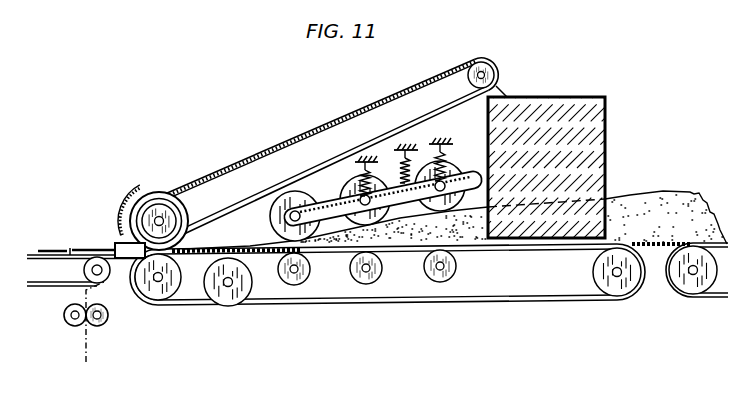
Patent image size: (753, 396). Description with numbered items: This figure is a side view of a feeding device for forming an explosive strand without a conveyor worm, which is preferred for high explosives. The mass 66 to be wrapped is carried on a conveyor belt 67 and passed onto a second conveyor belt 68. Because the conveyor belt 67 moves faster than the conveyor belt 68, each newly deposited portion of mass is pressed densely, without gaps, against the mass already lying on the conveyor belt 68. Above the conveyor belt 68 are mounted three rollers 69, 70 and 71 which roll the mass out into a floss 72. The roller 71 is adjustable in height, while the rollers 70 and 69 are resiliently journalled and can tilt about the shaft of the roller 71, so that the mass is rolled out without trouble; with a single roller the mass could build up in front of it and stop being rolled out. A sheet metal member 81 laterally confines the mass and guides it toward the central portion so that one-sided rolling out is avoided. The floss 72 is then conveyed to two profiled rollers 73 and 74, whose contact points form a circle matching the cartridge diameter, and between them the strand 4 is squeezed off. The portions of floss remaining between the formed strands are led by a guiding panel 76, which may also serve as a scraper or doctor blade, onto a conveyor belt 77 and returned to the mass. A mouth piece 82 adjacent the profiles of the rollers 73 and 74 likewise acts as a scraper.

The strand 4 is at (100, 250).
The mass 66 is at (648, 202).
The conveyor belt 67 is at (680, 297).
The second conveyor belt 68 is at (553, 244).
The roller 69 is at (411, 136).
The roller 70 is at (358, 188).
The roller 71 is at (285, 198).
The floss 72 is at (232, 260).
The profiled roller 73 is at (147, 192).
The profiled roller 74 is at (163, 308).
The guiding panel 76 is at (123, 205).
The conveyor belt 77 is at (222, 170).
The sheet metal member 81 is at (578, 105).
The mouth piece 82 is at (120, 262).